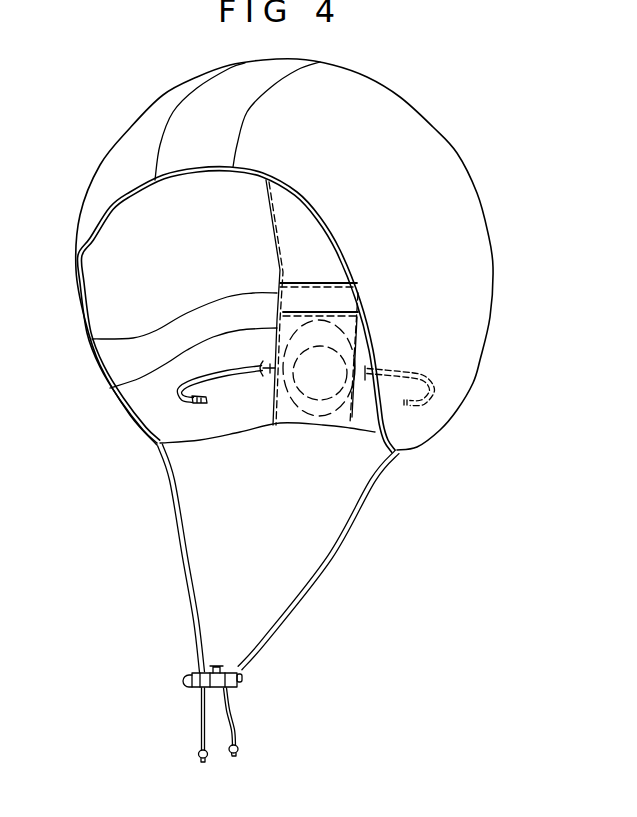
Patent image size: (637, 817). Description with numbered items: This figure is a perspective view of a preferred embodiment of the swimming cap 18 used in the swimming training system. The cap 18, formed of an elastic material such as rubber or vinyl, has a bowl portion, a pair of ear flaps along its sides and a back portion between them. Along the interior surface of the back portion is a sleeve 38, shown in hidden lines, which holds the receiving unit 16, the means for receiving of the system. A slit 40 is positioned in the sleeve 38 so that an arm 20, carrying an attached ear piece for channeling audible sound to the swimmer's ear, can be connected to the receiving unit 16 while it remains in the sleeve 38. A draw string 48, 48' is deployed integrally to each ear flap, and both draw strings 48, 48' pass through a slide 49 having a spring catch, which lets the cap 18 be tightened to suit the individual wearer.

The cap 18 is at (121, 83).
The arm 20 is at (143, 431).
The sleeve 38 is at (92, 339).
The slit 40 is at (112, 388).
The receiving unit 16 is at (298, 407).
The draw string 48' is at (152, 558).
The draw string 48 is at (333, 559).
The slide 49 is at (241, 683).